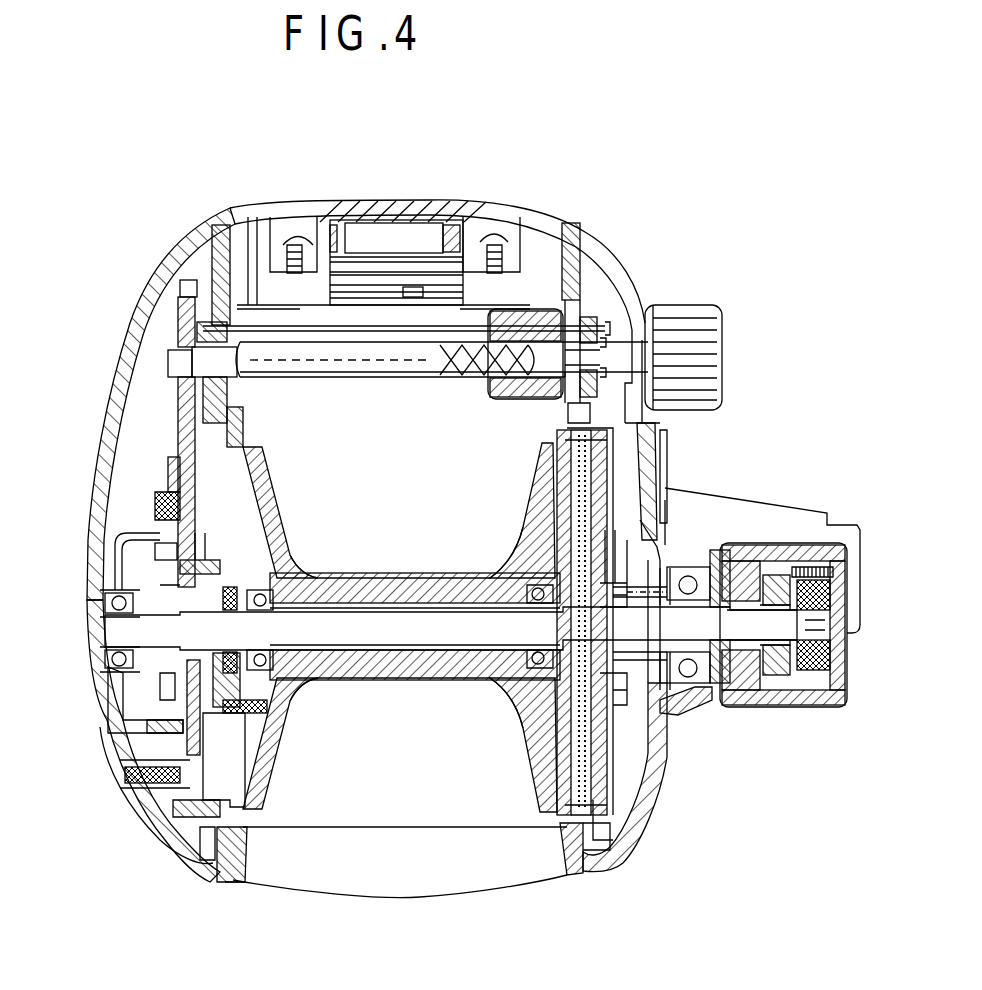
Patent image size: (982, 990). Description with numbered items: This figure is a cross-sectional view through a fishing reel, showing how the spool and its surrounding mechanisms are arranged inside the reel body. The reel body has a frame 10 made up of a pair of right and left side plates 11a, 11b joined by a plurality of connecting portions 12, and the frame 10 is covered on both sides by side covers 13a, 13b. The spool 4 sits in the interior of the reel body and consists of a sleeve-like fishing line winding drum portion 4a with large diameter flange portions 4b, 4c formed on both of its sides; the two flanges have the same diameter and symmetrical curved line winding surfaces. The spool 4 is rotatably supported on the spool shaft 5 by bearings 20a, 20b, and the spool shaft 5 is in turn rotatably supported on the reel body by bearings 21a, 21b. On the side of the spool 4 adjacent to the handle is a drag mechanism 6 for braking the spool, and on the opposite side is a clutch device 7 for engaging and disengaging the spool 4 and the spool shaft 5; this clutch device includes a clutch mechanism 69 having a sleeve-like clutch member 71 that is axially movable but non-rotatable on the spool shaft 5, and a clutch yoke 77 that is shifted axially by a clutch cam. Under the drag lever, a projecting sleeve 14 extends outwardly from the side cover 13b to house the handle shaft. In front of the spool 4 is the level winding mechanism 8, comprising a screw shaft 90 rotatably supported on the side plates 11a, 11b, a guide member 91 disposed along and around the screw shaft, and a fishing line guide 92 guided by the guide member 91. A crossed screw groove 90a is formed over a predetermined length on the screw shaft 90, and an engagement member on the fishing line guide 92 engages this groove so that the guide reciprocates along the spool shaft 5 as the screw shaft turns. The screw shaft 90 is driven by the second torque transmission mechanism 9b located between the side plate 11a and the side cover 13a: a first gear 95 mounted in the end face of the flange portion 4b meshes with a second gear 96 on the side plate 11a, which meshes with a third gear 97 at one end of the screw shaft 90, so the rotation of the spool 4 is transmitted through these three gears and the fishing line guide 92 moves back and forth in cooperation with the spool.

The spool 4 is at (401, 615).
The fishing line winding drum portion 4a is at (330, 578).
The flange portion 4b is at (264, 484).
The flange portion 4c is at (536, 492).
The spool shaft 5 is at (376, 625).
The drag mechanism 6 is at (600, 485).
The clutch device 7 is at (148, 588).
The level winding mechanism 8 is at (381, 380).
The second torque transmission mechanism 9b is at (150, 385).
The frame 10 is at (236, 884).
The side plate 11a is at (220, 885).
The side plate 11b is at (576, 888).
The connecting portions 12 is at (356, 885).
The side cover 13a is at (155, 840).
The side cover 13b is at (623, 848).
The projecting sleeve 14 is at (775, 497).
The bearing 20a is at (308, 700).
The bearing 20b is at (512, 700).
The bearing 21a is at (112, 628).
The bearing 21b is at (702, 707).
The clutch mechanism 69 is at (154, 602).
The clutch member 71 is at (120, 700).
The clutch yoke 77 is at (135, 773).
The screw shaft 90 is at (597, 335).
The crossed screw groove 90a is at (452, 380).
The guide member 91 is at (236, 320).
The fishing line guide 92 is at (543, 313).
The first gear 95 is at (220, 735).
The second gear 96 is at (175, 455).
The third gear 97 is at (178, 295).